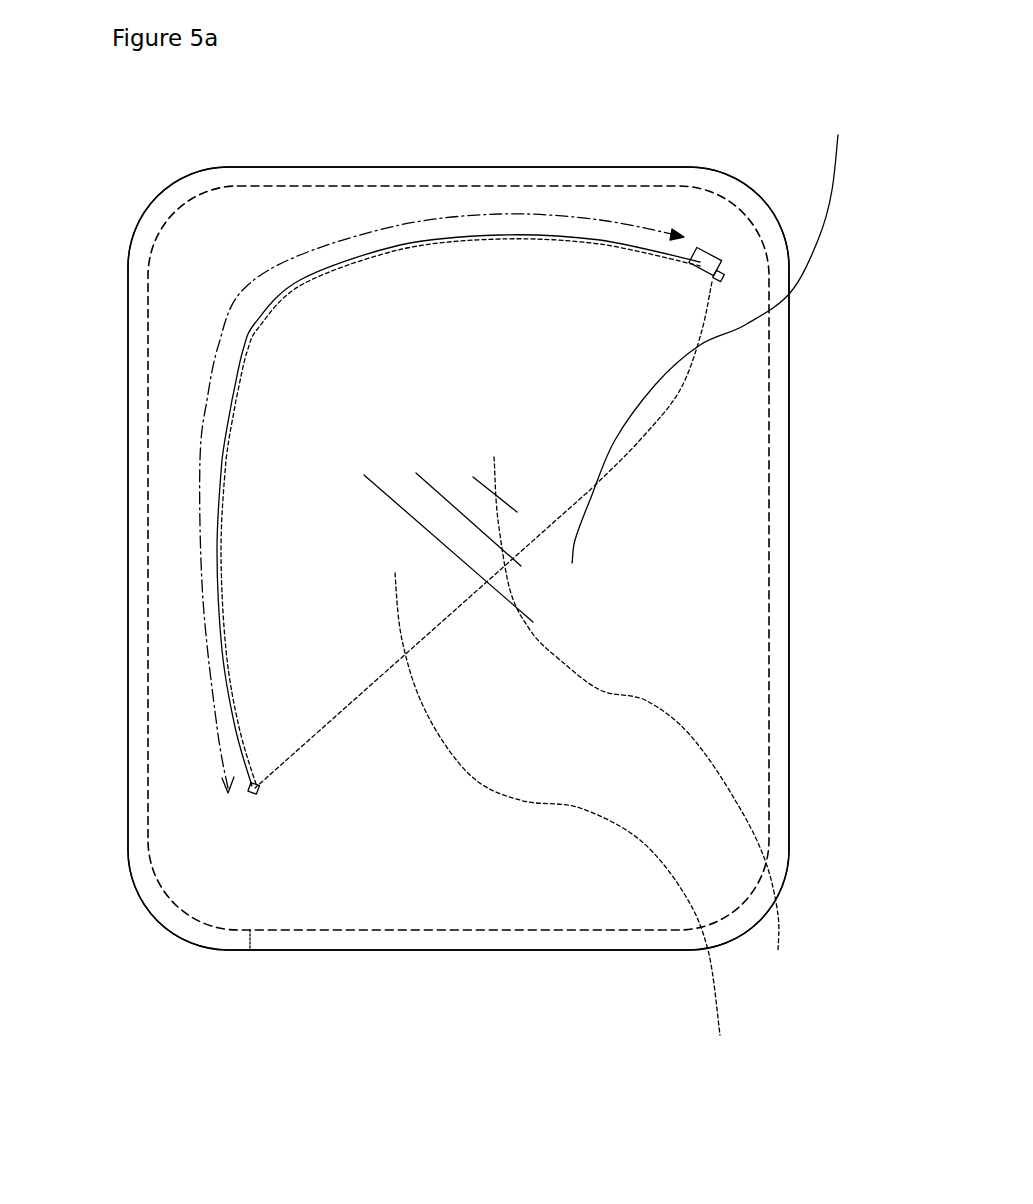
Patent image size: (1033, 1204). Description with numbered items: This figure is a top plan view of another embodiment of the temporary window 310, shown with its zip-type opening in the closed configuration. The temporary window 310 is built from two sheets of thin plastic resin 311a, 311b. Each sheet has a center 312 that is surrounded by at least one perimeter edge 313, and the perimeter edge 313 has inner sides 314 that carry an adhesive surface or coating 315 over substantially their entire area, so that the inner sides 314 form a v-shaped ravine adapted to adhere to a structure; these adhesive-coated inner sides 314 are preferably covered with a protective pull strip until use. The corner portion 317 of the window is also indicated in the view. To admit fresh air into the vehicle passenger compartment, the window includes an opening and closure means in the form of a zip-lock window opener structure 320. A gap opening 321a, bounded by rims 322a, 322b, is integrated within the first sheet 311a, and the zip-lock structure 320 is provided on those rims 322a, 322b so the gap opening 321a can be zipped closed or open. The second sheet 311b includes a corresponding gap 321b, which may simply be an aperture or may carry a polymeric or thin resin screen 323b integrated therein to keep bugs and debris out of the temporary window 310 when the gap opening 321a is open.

The temporary window 310 is at (305, 125).
The sheet of thin plastic resin 311a is at (200, 290).
The sheet of thin plastic resin 311b is at (228, 205).
The center 312 is at (613, 363).
The perimeter edge 313 is at (475, 167).
The inner sides 314 is at (370, 167).
The adhesive surface/coating 315 is at (602, 172).
The corner portion 317 is at (250, 930).
The zip-lock window opener structure 320 is at (712, 250).
The gap opening 321a is at (242, 725).
The gap 321b is at (547, 626).
The rim 322a is at (238, 382).
The rim 322b is at (245, 350).
The screen 323b is at (578, 820).